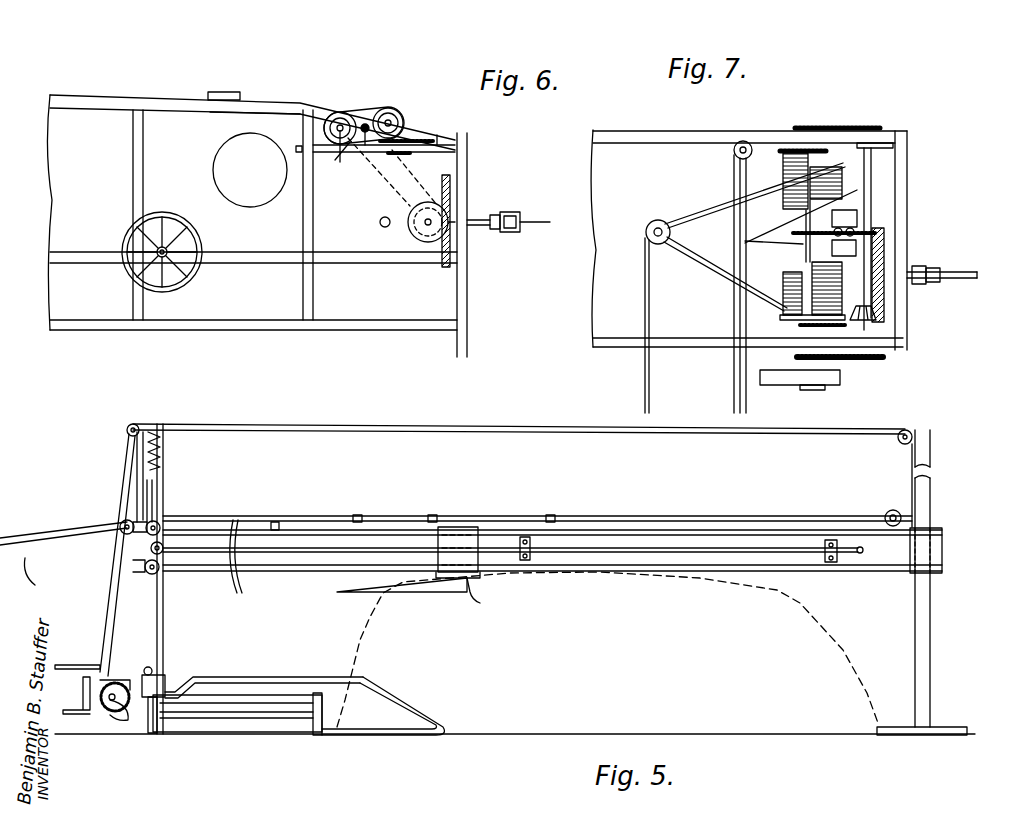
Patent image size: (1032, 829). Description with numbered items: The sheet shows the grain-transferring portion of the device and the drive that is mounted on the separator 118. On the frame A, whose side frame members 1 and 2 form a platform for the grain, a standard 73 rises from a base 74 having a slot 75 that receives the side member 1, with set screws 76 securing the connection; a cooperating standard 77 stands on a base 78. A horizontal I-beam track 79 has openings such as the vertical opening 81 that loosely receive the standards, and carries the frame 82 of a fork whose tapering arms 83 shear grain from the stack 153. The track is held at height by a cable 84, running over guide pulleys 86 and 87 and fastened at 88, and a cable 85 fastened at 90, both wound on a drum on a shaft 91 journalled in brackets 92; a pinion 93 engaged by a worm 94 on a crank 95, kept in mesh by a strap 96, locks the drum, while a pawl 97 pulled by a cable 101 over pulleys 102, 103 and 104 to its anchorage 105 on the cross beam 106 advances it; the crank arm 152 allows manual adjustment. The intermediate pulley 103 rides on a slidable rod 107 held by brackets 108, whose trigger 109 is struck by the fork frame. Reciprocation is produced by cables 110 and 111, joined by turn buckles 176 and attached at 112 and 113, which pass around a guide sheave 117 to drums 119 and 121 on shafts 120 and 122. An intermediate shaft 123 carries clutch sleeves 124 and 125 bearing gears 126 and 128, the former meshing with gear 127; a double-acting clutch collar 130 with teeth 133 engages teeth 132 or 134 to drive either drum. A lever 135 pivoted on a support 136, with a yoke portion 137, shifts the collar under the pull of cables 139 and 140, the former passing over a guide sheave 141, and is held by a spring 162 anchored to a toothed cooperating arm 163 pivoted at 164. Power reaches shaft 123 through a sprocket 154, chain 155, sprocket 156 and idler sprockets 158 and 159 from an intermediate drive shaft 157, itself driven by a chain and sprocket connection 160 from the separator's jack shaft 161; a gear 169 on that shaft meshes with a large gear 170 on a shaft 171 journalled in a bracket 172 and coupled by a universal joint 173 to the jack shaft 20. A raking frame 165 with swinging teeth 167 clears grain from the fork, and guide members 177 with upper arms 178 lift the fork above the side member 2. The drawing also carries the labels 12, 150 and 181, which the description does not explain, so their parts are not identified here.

In FIG. 5, the frame member 1 is at (157, 734).
In FIG. 5, the frame member 2 is at (237, 711).
In FIG. 5, the cylinder end 12 is at (332, 707).
In FIG. 7, the jack shaft 20 is at (960, 275).
In FIG. 5, the standard 73 is at (165, 598).
In FIG. 5, the base 74 is at (235, 678).
In FIG. 5, the slot 75 is at (160, 678).
In FIG. 5, the set screws 76 is at (150, 712).
In FIG. 5, the cooperating standard 77 is at (932, 612).
In FIG. 5, the base 78 is at (950, 727).
In FIG. 5, the track 79 is at (625, 527).
In FIG. 5, the vertical opening 81 is at (940, 550).
In FIG. 5, the frame of fork 82 is at (481, 594).
In FIG. 5, the tapering arms 83 is at (350, 592).
In FIG. 5, the cable 84 is at (470, 425).
In FIG. 5, the cable 85 is at (136, 478).
In FIG. 5, the guide pulley 86 is at (138, 425).
In FIG. 5, the guide pulley 87 is at (910, 432).
In FIG. 5, the cable attachment point 88 is at (898, 510).
In FIG. 5, the cable attachment point 90 is at (125, 560).
In FIG. 5, the shaft 91 is at (117, 697).
In FIG. 5, the brackets 92 is at (115, 720).
In FIG. 5, the pinion 93 is at (140, 705).
In FIG. 5, the worm 94 is at (123, 639).
In FIG. 5, the crank 95 is at (83, 682).
In FIG. 5, the strap 96 is at (106, 706).
In FIG. 5, the pawl 97 is at (112, 672).
In FIG. 5, the cable 101 is at (154, 496).
In FIG. 5, the guide pulley 102 is at (160, 572).
In FIG. 5, the intermediate guide pulley 103 is at (145, 575).
In FIG. 5, the guide pulley 104 is at (160, 522).
In FIG. 5, the cable attachment point 105 is at (164, 444).
In FIG. 5, the cross beam 106 is at (134, 440).
In FIG. 5, the slidable rod 107 is at (305, 548).
In FIG. 5, the guiding and retaining brackets 108 is at (218, 522).
In FIG. 5, the trigger 109 is at (195, 530).
In FIG. 6, the cable 110 is at (304, 103).
In FIG. 7, the cable 110 is at (700, 214).
In FIG. 5, the cable 110 is at (10, 545).
In FIG. 6, the cable 111 is at (262, 108).
In FIG. 7, the cable 111 is at (724, 266).
In FIG. 5, the cable 111 is at (38, 565).
In FIG. 5, the cable connection 112 is at (478, 527).
In FIG. 5, the cable connection 113 is at (434, 514).
In FIG. 6, the guide sheave 117 is at (224, 88).
In FIG. 7, the guide sheave 117 is at (677, 268).
In FIG. 6, the separator 118 is at (272, 333).
In FIG. 7, the separator 118 is at (593, 341).
In FIG. 6, the drum 119 is at (404, 124).
In FIG. 7, the drum 119 is at (822, 200).
In FIG. 6, the shaft 120 is at (404, 118).
In FIG. 7, the shaft 120 is at (832, 158).
In FIG. 7, the drum 121 is at (784, 277).
In FIG. 6, the shaft 122 is at (340, 145).
In FIG. 7, the shaft 122 is at (800, 326).
In FIG. 7, the shaft 123 is at (797, 141).
In FIG. 7, the clutch sleeve 124 is at (800, 211).
In FIG. 7, the clutch sleeve 125 is at (833, 286).
In FIG. 7, the gear 126 is at (882, 130).
In FIG. 6, the gear 127 is at (297, 147).
In FIG. 7, the gear 127 is at (784, 160).
In FIG. 7, the gear 128 is at (800, 345).
In FIG. 6, the double-acting clutch collar 130 is at (368, 122).
In FIG. 7, the double-acting clutch collar 130 is at (806, 246).
In FIG. 7, the teeth 132 is at (848, 200).
In FIG. 7, the teeth 133 is at (790, 261).
In FIG. 7, the teeth 134 is at (844, 248).
In FIG. 6, the lever 135 is at (342, 155).
In FIG. 7, the lever 135 is at (677, 316).
In FIG. 6, the support 136 is at (392, 172).
In FIG. 7, the support 136 is at (884, 197).
In FIG. 7, the yoke portion 137 is at (787, 226).
In FIG. 7, the cable 139 is at (752, 170).
In FIG. 5, the cable 139 is at (72, 665).
In FIG. 6, the cable 140 is at (290, 150).
In FIG. 7, the cable 140 is at (745, 297).
In FIG. 7, the guide sheave 141 is at (733, 152).
In FIG. 6, the rack 150 is at (405, 118).
In FIG. 5, the crank arm 152 is at (75, 706).
In FIG. 5, the stack 153 is at (805, 603).
In FIG. 7, the sprocket 154 is at (800, 124).
In FIG. 6, the chain 155 is at (462, 152).
In FIG. 7, the chain 155 is at (858, 127).
In FIG. 6, the sprocket 156 is at (418, 240).
In FIG. 7, the sprocket 156 is at (878, 127).
In FIG. 6, the intermediate drive shaft 157 is at (424, 225).
In FIG. 7, the intermediate drive shaft 157 is at (872, 160).
In FIG. 6, the idler sprocket 158 is at (398, 108).
In FIG. 6, the idler sprocket 159 is at (360, 108).
In FIG. 7, the chain and sprocket connection 160 is at (855, 370).
In FIG. 6, the jack shaft 161 is at (380, 223).
In FIG. 7, the jack shaft 161 is at (838, 388).
In FIG. 6, the spring 162 is at (415, 148).
In FIG. 7, the spring 162 is at (835, 245).
In FIG. 6, the cooperating arm 163 is at (440, 145).
In FIG. 7, the cooperating arm 163 is at (828, 250).
In FIG. 7, the pivot 164 is at (860, 236).
In FIG. 5, the frame of raking member 165 is at (273, 521).
In FIG. 5, the swinging teeth 167 is at (244, 578).
In FIG. 6, the gear 169 is at (428, 236).
In FIG. 7, the gear 169 is at (878, 322).
In FIG. 6, the gear 170 is at (451, 205).
In FIG. 7, the gear 170 is at (888, 266).
In FIG. 6, the shaft 171 is at (478, 218).
In FIG. 7, the shaft 171 is at (908, 286).
In FIG. 7, the bracket 172 is at (912, 275).
In FIG. 6, the universal joint 173 is at (506, 213).
In FIG. 7, the universal joint 173 is at (935, 286).
In FIG. 5, the turn buckles 176 is at (358, 514).
In FIG. 5, the guide members 177 is at (365, 729).
In FIG. 5, the upper arm 178 is at (330, 676).
In FIG. 5, the bracket 181 is at (885, 512).
In FIG. 5, the frame A is at (270, 734).